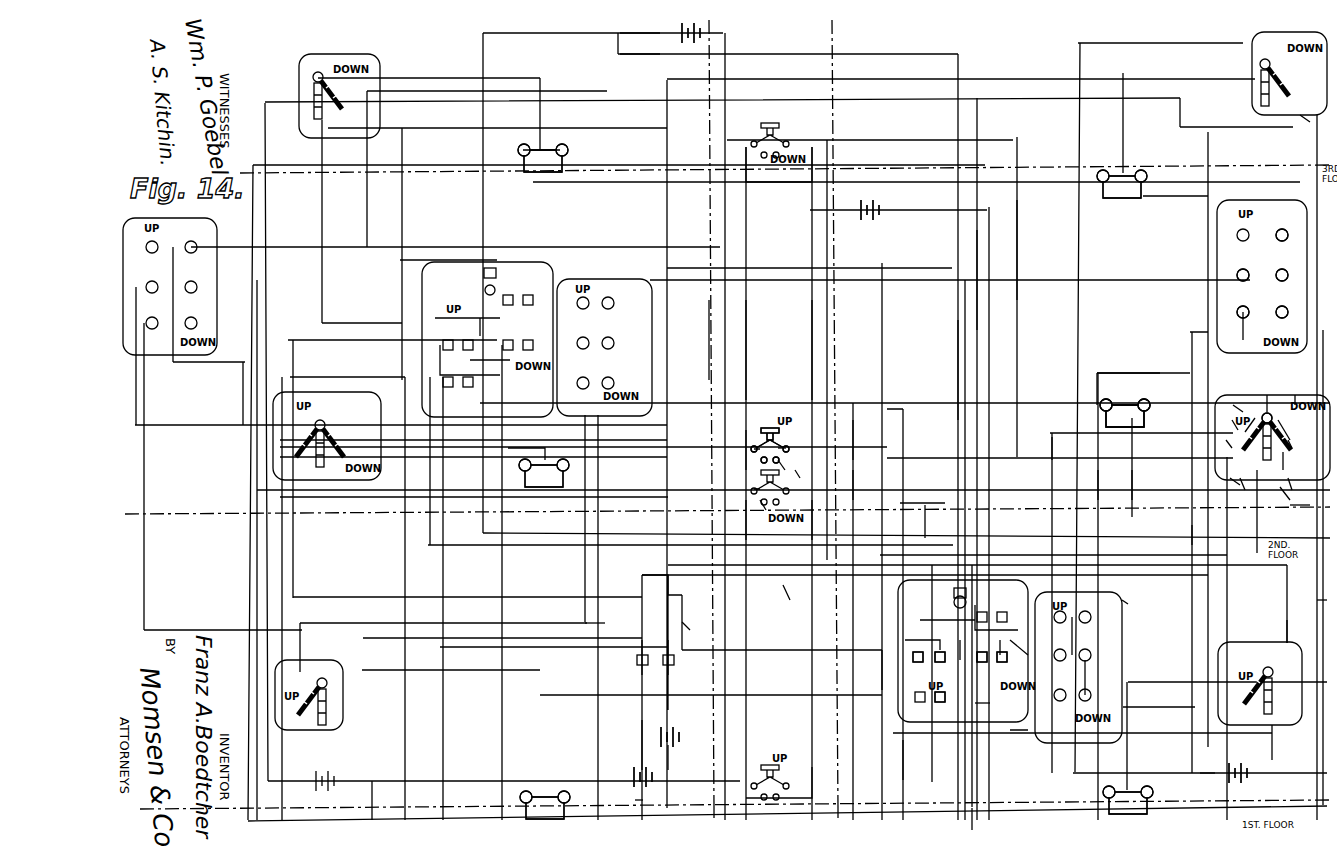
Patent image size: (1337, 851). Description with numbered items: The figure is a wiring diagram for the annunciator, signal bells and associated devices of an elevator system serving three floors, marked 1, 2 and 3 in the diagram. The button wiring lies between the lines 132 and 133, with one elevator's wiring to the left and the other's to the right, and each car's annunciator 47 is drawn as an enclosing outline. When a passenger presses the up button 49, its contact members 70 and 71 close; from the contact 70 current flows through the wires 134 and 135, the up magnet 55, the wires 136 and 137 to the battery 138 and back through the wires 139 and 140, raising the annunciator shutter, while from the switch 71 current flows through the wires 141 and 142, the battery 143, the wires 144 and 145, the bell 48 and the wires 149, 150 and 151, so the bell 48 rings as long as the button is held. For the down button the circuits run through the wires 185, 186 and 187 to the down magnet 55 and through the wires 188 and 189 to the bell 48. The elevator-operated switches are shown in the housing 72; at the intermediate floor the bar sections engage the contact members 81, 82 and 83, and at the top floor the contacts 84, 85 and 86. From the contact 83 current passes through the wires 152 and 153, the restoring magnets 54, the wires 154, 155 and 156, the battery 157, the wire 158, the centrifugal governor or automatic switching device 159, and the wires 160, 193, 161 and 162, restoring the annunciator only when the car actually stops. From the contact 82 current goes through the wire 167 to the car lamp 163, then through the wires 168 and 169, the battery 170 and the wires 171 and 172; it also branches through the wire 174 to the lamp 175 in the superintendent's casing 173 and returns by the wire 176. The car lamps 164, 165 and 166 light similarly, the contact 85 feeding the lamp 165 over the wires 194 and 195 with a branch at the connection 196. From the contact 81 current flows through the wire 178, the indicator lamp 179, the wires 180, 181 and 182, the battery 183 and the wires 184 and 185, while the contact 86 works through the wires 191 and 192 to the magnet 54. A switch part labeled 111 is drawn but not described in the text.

The first floor push button switch 1 is at (836, 813).
The second floor push button switch 2 is at (834, 434).
The third floor push button switch 3 is at (832, 178).
The annunciator 47 is at (470, 262).
The bell 48 is at (954, 602).
The button 49 is at (782, 425).
The magnet 54 is at (946, 668).
The magnet 55 is at (979, 668).
The switch or contact member 70 is at (788, 446).
The switch or contact member 71 is at (755, 448).
The housing 72 is at (1230, 478).
The contact member 81 is at (1245, 413).
The contact member 82 is at (1230, 420).
The contact member 83 is at (1225, 442).
The contact 84 is at (1283, 425).
The contact 85 is at (1292, 438).
The contact 86 is at (1298, 450).
The switch lever 111 is at (1271, 397).
The line 132 is at (718, 826).
The line 133 is at (840, 826).
The wire 134 is at (845, 448).
The wire 135 is at (922, 505).
The wire 136 is at (962, 693).
The wire 137 is at (977, 285).
The battery 138 is at (878, 212).
The wire 139 is at (812, 345).
The wire 140 is at (806, 470).
The wire 141 is at (746, 448).
The wire 142 is at (720, 337).
The battery 143 is at (650, 66).
The wire 144 is at (645, 30).
The wire 145 is at (1017, 247).
The wire 149 is at (955, 358).
The wire 150 is at (747, 345).
The wire 151 is at (780, 470).
The wire 152 is at (1149, 480).
The wire 153 is at (886, 655).
The wire 154 is at (897, 745).
The wire 155 is at (785, 816).
The wire 156 is at (643, 798).
The battery 157 is at (655, 780).
The wire 158 is at (641, 735).
The automatic switching device 159 is at (638, 664).
The wire 160 is at (600, 623).
The wire 161 is at (1192, 525).
The wire 162 is at (1255, 478).
The lamp 163 is at (1248, 264).
The lamp 164 is at (1248, 300).
The lamp 165 is at (1090, 662).
The lamp 166 is at (1285, 224).
The wire 167 is at (1232, 408).
The wire 168 is at (1284, 301).
The wire 169 is at (1205, 775).
The battery 170 is at (1250, 780).
The wire 171 is at (1296, 772).
The wire 172 is at (1283, 478).
The casing 173 is at (1122, 602).
The wire 174 is at (1062, 440).
The lamp 175 is at (1068, 650).
The wire 176 is at (1102, 677).
The wire 178 is at (1143, 400).
The lamp 179 is at (1108, 400).
The wire 180 is at (1113, 485).
The wire 181 is at (1320, 600).
The wire 182 is at (670, 755).
The battery 183 is at (675, 735).
The wire 184 is at (682, 622).
The wire 185 is at (812, 505).
The wire 186 is at (1028, 655).
The wire 187 is at (843, 490).
The wire 188 is at (755, 512).
The wire 189 is at (746, 490).
The wire 191 is at (930, 532).
The wire 192 is at (997, 701).
The wire 193 is at (677, 588).
The wire 194 is at (1301, 393).
The wire 195 is at (1265, 370).
The connection 196 is at (1284, 443).